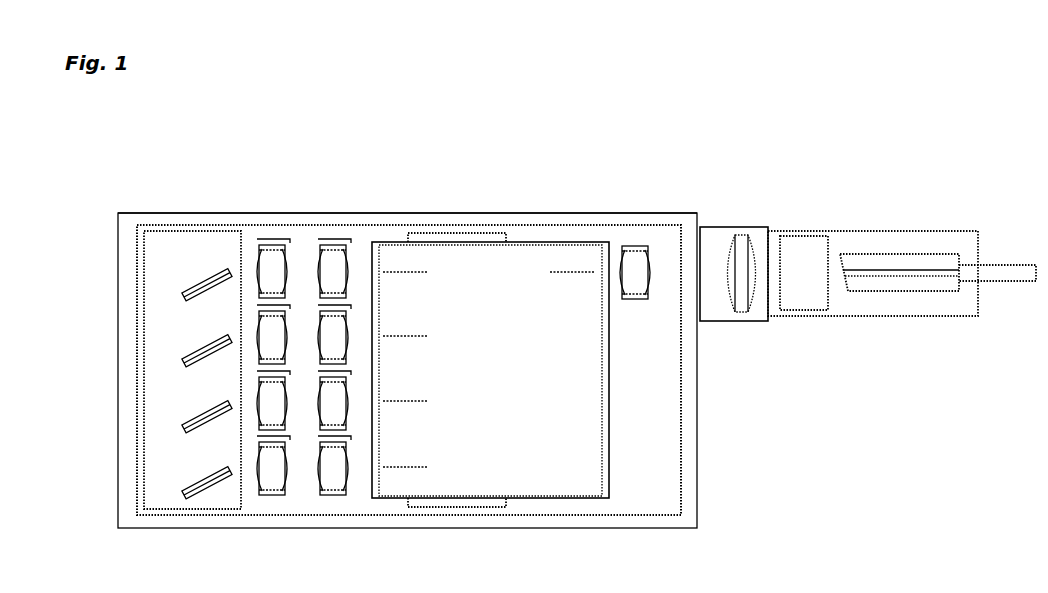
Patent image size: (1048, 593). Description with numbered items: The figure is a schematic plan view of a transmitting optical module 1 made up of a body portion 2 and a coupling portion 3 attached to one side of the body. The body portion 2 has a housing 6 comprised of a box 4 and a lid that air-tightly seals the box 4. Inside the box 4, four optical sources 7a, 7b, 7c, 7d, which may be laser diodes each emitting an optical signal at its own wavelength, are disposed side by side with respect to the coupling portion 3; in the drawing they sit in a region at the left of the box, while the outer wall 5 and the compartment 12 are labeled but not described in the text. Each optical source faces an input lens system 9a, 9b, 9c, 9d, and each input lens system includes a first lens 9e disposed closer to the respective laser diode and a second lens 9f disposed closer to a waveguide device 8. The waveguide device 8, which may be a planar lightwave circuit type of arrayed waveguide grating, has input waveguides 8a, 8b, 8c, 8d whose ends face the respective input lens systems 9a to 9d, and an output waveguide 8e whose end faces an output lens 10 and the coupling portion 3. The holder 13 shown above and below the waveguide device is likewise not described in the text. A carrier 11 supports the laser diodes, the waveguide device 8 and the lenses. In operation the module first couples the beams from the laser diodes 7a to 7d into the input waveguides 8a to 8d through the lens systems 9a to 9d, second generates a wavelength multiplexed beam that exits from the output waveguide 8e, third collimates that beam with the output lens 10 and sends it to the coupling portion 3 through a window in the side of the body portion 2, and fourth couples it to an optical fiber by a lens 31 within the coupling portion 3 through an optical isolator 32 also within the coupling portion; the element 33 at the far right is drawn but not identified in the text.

The optical transmitter module 1 is at (736, 118).
The body portion 2 is at (127, 187).
The coupling portion 3 is at (887, 195).
The box 4 is at (370, 212).
The housing 5 is at (117, 363).
The housing 6 is at (668, 213).
The optical source 7a is at (187, 290).
The optical source 7b is at (187, 356).
The optical source 7c is at (187, 422).
The optical source 7d is at (187, 488).
The waveguide device 8 is at (572, 250).
The input waveguide 8a is at (427, 272).
The input waveguide 8b is at (427, 336).
The input waveguide 8c is at (427, 401).
The input waveguide 8d is at (427, 467).
The output waveguide 8e is at (552, 272).
The input lens system 9a is at (304, 263).
The input lens system 9b is at (304, 329).
The input lens system 9c is at (304, 395).
The input lens system 9d is at (304, 495).
The first lens 9e is at (272, 487).
The second lens 9f is at (334, 484).
The output lens 10 is at (637, 247).
The carrier 11 is at (535, 236).
The light source compartment 12 is at (201, 245).
The holder 13 is at (452, 240).
The lens 31 is at (745, 240).
The optical isolator 32 is at (807, 245).
The connector 33 is at (1016, 268).